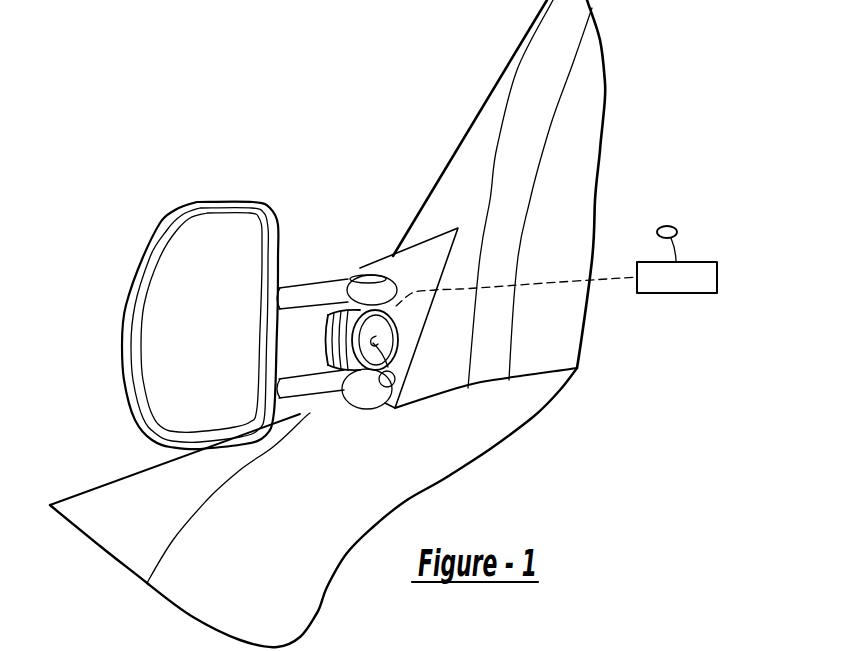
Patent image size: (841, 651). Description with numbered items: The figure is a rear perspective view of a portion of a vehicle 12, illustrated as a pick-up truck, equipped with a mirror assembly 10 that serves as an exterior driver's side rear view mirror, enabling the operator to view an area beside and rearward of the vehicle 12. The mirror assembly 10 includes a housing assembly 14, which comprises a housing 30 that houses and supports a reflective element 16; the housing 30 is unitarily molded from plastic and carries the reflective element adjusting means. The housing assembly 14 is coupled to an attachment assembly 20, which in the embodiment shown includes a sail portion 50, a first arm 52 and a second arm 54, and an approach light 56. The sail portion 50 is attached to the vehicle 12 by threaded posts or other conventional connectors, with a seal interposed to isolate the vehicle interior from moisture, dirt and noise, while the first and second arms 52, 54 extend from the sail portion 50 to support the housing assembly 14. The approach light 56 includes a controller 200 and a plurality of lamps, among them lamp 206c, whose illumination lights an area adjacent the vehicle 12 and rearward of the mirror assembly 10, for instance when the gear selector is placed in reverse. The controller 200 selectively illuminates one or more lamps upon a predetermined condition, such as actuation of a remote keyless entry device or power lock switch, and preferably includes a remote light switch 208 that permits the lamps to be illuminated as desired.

The mirror assembly 10 is at (177, 288).
The vehicle 12 is at (478, 89).
The housing assembly 14 is at (138, 253).
The reflective element 16 is at (208, 293).
The attachment assembly 20 is at (420, 258).
The housing 30 is at (134, 417).
The sail portion 50 is at (423, 313).
The first arm 52 is at (302, 287).
The second arm 54 is at (299, 392).
The approach light 56 is at (403, 352).
The controller 200 is at (688, 293).
The lamp 206c is at (386, 390).
The remote light switch 208 is at (677, 229).